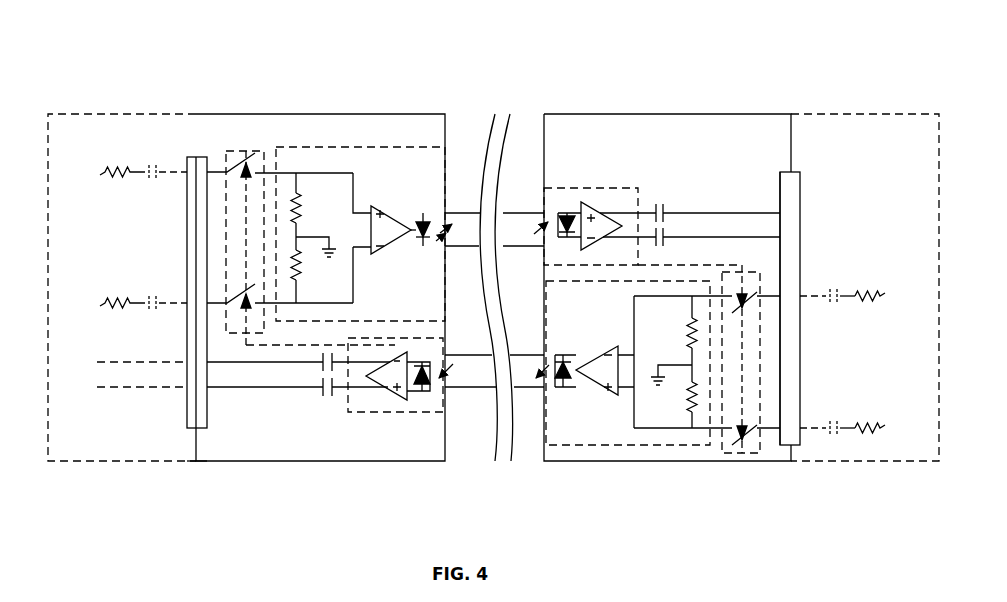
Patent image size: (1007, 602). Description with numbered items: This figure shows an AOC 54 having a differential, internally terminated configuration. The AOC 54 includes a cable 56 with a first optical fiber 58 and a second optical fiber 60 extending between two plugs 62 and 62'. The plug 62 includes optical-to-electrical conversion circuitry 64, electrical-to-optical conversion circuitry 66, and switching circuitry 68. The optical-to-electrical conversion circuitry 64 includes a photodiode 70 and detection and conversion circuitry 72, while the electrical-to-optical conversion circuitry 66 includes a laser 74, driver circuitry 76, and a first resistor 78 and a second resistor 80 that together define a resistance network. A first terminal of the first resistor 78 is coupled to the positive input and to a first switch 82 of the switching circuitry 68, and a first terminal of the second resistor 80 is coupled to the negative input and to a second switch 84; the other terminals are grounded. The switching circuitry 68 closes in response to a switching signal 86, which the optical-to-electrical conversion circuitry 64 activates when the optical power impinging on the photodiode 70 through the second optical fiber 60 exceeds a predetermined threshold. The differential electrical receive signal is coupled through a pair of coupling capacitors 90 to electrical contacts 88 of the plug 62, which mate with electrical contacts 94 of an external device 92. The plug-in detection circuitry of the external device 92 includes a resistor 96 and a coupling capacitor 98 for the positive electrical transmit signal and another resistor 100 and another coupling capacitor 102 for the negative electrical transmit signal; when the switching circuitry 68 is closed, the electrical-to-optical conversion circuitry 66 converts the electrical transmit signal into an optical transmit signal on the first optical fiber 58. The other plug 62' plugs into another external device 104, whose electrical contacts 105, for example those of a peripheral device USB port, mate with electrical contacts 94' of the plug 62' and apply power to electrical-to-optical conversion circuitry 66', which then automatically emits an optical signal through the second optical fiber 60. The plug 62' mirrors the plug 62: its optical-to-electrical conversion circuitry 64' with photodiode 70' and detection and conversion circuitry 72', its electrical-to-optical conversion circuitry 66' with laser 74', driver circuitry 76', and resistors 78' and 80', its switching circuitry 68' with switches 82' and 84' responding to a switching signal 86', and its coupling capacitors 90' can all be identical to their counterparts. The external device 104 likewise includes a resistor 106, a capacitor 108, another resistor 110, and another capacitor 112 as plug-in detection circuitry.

The AOC 54 is at (533, 62).
The cable 56 is at (487, 113).
The first optical fiber 58 is at (472, 248).
The second optical fiber 60 is at (472, 354).
The plug 62 is at (320, 265).
The plug 62' is at (667, 265).
The optical-to-electrical conversion circuitry 64 is at (395, 397).
The optical-to-electrical conversion circuitry 64' is at (591, 202).
The electrical-to-optical conversion circuitry 66 is at (360, 203).
The electrical-to-optical conversion circuitry 66' is at (628, 390).
The switching circuitry 68 is at (240, 217).
The switching circuitry 68' is at (741, 382).
The photodiode 70 is at (430, 400).
The photodiode 70' is at (547, 208).
The detection and conversion circuitry 72 is at (370, 397).
The detection and conversion circuitry 72' is at (598, 208).
The laser 74 is at (434, 213).
The laser 74' is at (556, 383).
The driver circuitry 76 is at (384, 236).
The driver circuitry 76' is at (597, 362).
The first resistor 78 is at (318, 215).
The resistor 78' is at (683, 405).
The second resistor 80 is at (322, 275).
The resistor 80' is at (683, 340).
The first switch 82 is at (280, 131).
The switch 82' is at (756, 281).
The second switch 84 is at (280, 351).
The switch 84' is at (764, 458).
The switching signal 86 is at (320, 381).
The switching signal 86' is at (695, 226).
The electrical contacts 88 is at (205, 446).
The coupling capacitors 90 is at (298, 394).
The coupling capacitors 90' is at (690, 207).
The external device 92 is at (142, 113).
The electrical contacts 94 is at (187, 327).
The electrical contacts 94' is at (770, 290).
The resistor 96 is at (122, 180).
The coupling capacitor 98 is at (155, 180).
The resistor 100 is at (120, 294).
The coupling capacitor 102 is at (155, 294).
The external device 104 is at (881, 113).
The electrical contacts 105 is at (800, 172).
The resistor 106 is at (872, 302).
The capacitor 108 is at (836, 302).
The resistor 110 is at (870, 426).
The capacitor 112 is at (834, 424).